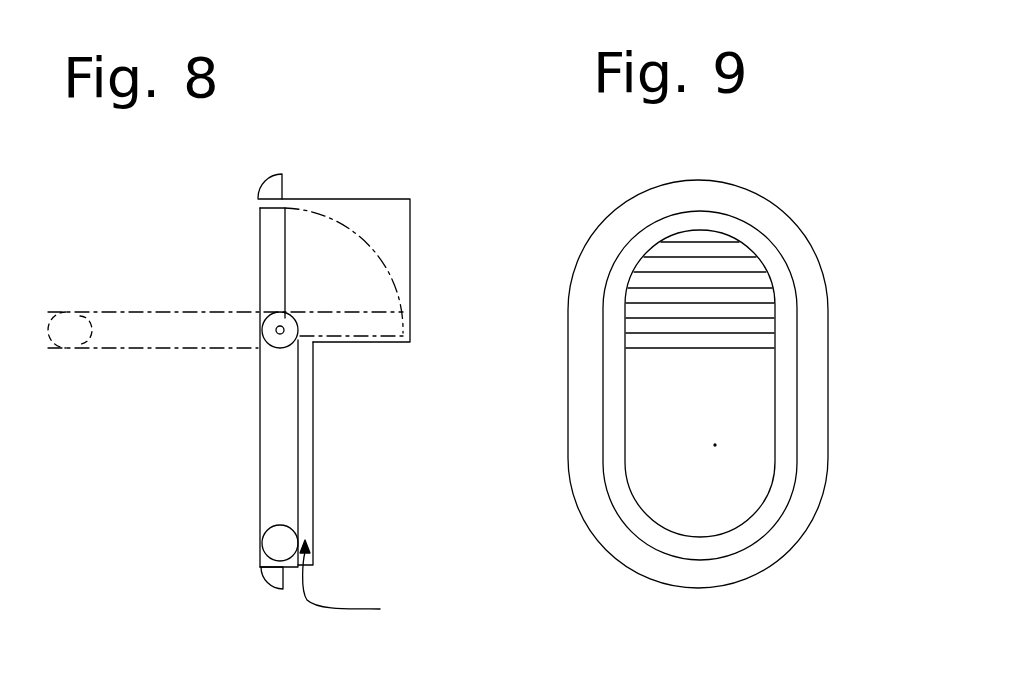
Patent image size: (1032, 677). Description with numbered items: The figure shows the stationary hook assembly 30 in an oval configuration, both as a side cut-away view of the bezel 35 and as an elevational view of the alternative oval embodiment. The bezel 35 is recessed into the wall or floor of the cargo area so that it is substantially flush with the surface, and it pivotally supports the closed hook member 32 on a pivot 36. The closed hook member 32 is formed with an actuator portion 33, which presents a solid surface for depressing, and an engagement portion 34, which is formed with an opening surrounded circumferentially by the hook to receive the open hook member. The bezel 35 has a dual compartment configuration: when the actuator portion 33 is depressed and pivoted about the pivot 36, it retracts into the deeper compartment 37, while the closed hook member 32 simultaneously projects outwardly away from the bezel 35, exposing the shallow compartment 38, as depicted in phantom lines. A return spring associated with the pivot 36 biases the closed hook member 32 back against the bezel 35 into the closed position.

In FIG. 8, the stationary hook assembly 30 is at (356, 138).
In FIG. 9, the stationary hook assembly 30 is at (612, 598).
In FIG. 8, the closed hook member 32 is at (148, 310).
In FIG. 8, the actuator portion 33 is at (258, 258).
In FIG. 9, the actuator portion 33 is at (748, 282).
In FIG. 8, the engagement portion 34 is at (263, 443).
In FIG. 9, the engagement portion 34 is at (660, 439).
In FIG. 8, the bezel 35 is at (316, 458).
In FIG. 9, the bezel 35 is at (757, 192).
In FIG. 8, the pivot 36 is at (275, 340).
In FIG. 8, the deeper compartment 37 is at (396, 216).
In FIG. 8, the shallow compartment 38 is at (360, 583).